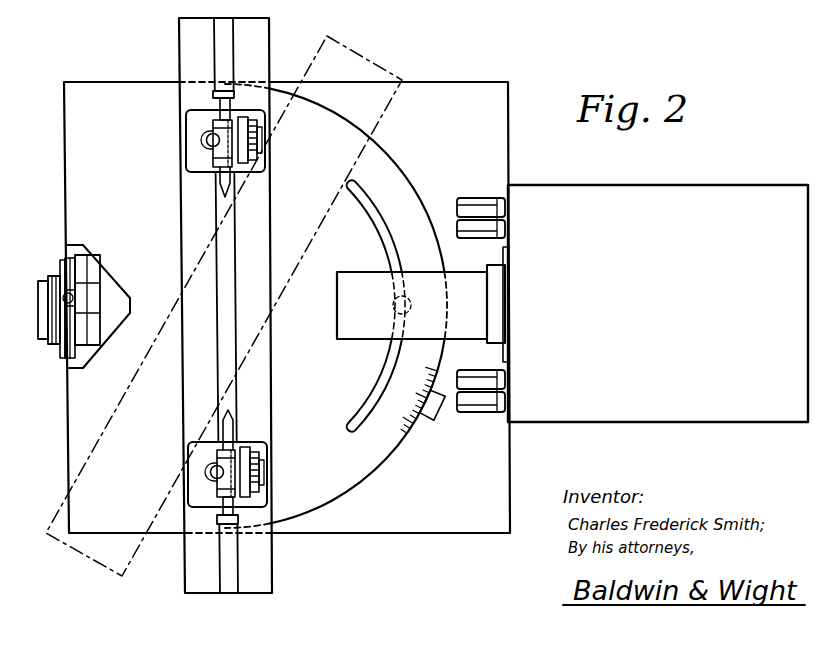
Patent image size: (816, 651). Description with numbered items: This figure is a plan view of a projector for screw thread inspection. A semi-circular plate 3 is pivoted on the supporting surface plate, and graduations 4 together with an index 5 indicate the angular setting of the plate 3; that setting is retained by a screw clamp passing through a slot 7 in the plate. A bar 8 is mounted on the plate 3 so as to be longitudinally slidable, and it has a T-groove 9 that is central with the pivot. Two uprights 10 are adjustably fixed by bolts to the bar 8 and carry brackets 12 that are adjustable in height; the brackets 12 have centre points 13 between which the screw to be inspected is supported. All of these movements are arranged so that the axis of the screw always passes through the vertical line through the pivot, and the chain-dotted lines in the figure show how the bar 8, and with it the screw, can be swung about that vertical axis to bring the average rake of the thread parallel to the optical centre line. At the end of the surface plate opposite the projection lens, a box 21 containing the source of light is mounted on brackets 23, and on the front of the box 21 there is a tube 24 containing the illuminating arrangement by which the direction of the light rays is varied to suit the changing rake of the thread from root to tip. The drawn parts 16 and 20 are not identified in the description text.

The semi-circular plate 3 is at (375, 459).
The graduations 4 is at (423, 399).
The index 5 is at (433, 421).
The slot 7 is at (375, 392).
The bar 8 is at (253, 244).
The T-groove 9 is at (237, 354).
The uprights 10 is at (193, 168).
The brackets 12 is at (228, 122).
The centre points 13 is at (219, 189).
The adjusting spindle 16 is at (52, 341).
The bracket 20 is at (81, 292).
The box 21 is at (658, 303).
The brackets 23 is at (480, 231).
The tube 24 is at (431, 326).